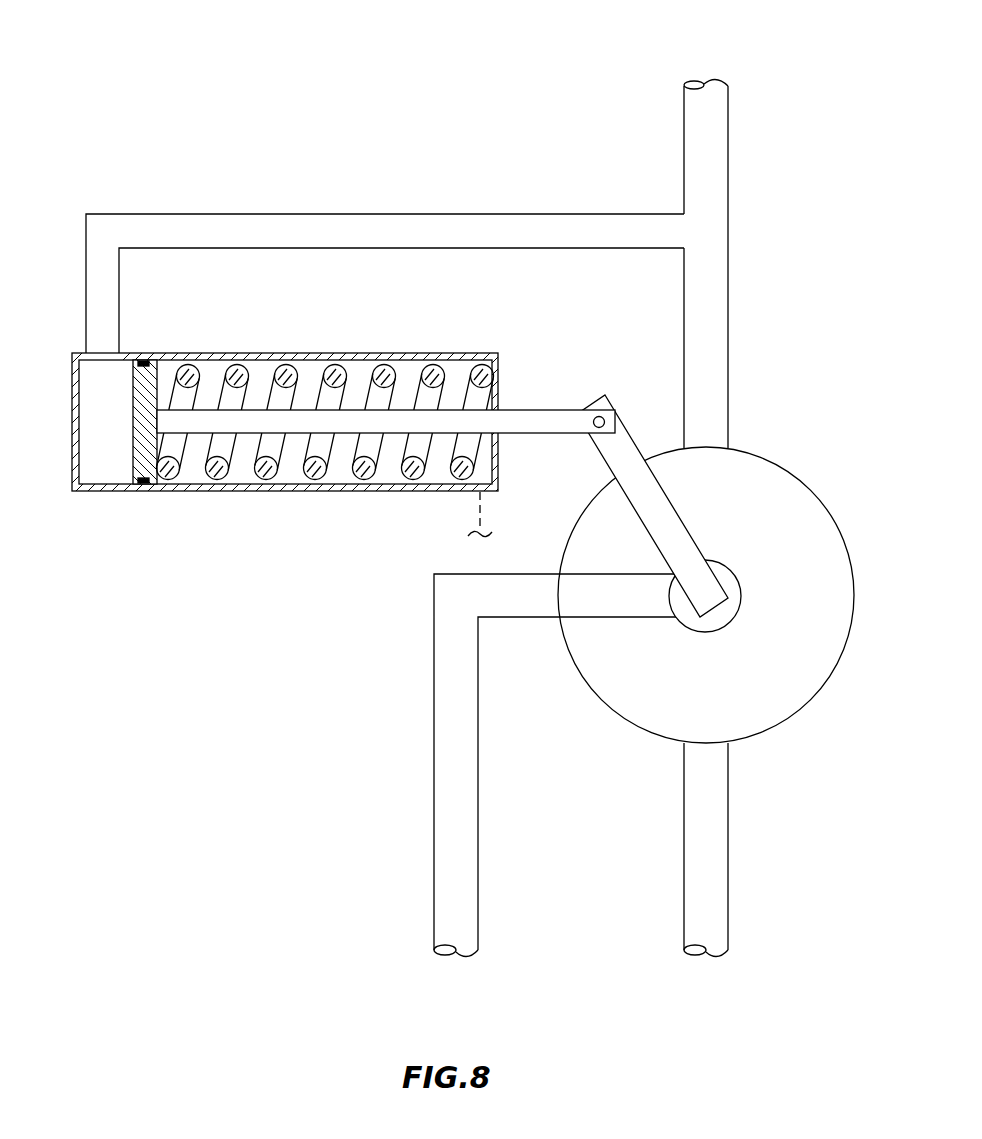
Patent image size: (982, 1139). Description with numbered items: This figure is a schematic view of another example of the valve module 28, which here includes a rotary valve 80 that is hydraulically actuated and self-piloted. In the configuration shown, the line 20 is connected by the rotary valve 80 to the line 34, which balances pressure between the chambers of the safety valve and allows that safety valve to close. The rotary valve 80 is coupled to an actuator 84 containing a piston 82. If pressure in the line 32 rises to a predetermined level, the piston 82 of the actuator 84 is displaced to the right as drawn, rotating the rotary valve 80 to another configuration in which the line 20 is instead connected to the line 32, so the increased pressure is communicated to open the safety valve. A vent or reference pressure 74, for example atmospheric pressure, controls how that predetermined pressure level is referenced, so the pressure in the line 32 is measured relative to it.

The valve module 28 is at (537, 80).
The line 32 is at (683, 165).
The line 34 is at (728, 814).
The line 20 is at (433, 808).
The rotary valve 80 is at (598, 680).
The actuator 84 is at (317, 415).
The piston 82 is at (132, 458).
The vent or reference pressure 74 is at (480, 509).